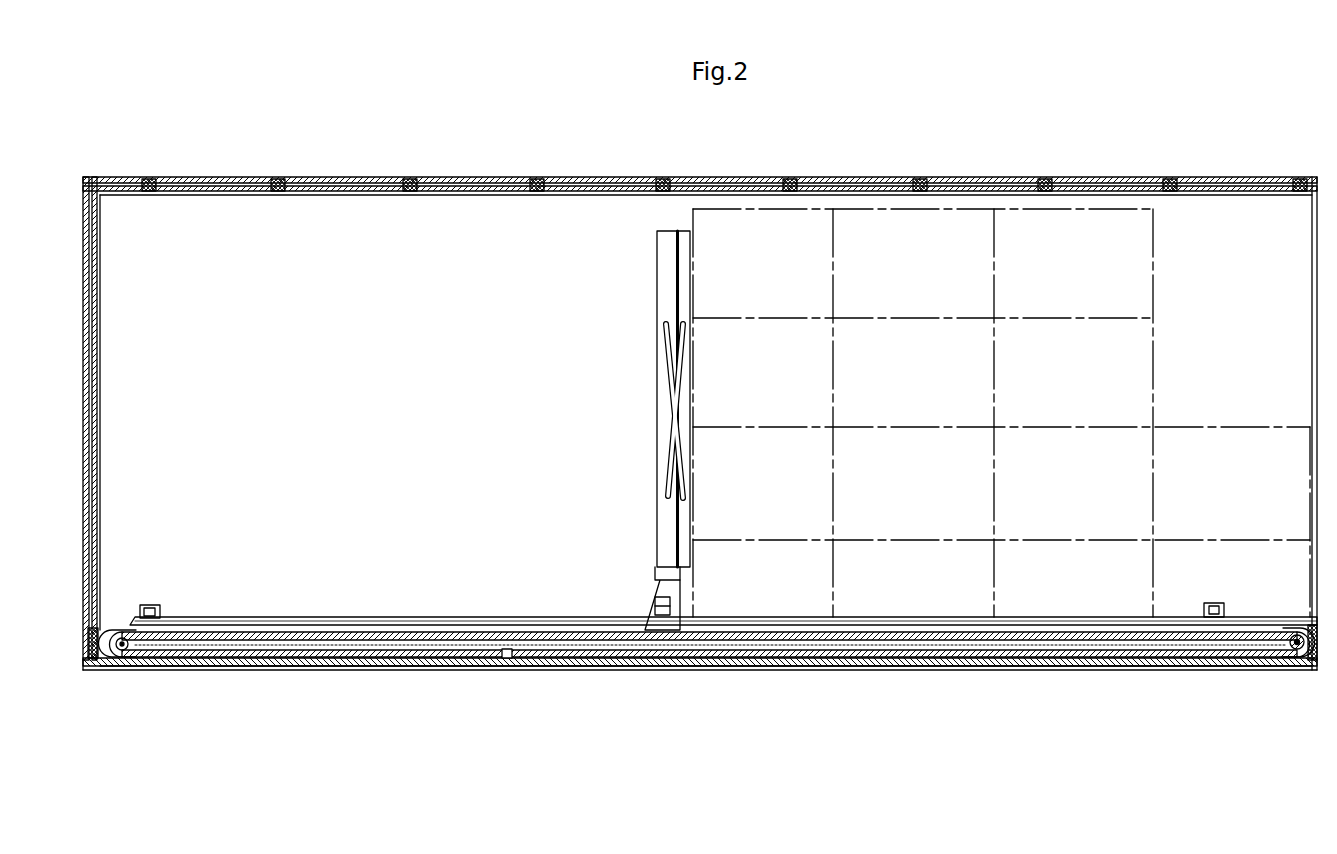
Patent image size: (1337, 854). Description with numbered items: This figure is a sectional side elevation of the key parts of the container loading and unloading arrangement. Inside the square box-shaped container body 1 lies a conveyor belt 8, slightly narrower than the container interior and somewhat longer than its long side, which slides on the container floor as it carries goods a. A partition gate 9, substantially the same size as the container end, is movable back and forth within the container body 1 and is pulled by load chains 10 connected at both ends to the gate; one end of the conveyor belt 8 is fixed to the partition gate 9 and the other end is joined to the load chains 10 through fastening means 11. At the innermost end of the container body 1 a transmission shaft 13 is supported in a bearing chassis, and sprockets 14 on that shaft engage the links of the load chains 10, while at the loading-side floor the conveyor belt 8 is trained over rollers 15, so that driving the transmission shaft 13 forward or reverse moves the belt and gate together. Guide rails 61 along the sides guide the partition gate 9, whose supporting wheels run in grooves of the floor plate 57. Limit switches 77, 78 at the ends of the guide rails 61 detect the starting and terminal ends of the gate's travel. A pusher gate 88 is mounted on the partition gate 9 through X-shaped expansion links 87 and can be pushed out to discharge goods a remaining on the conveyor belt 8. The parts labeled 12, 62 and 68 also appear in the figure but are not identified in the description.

The container body 1 is at (521, 178).
The conveyor belt 8 is at (912, 632).
The partition gate 9 is at (660, 272).
The load chains 10 is at (460, 632).
The fastening means 11 is at (508, 658).
The frame corner block 12 is at (118, 670).
The transmission shaft 13 is at (128, 648).
The sprockets 14 is at (129, 636).
The rollers 15 is at (1296, 648).
The floor plate 57 is at (1140, 662).
The guide rails 61 is at (558, 617).
The slider 62 is at (651, 600).
The connecting member 68 is at (685, 602).
The limit switch 77 is at (150, 606).
The limit switch 78 is at (1212, 603).
The X-shaped expansion links 87 is at (665, 392).
The pusher gate 88 is at (690, 288).
The goods a is at (1178, 427).